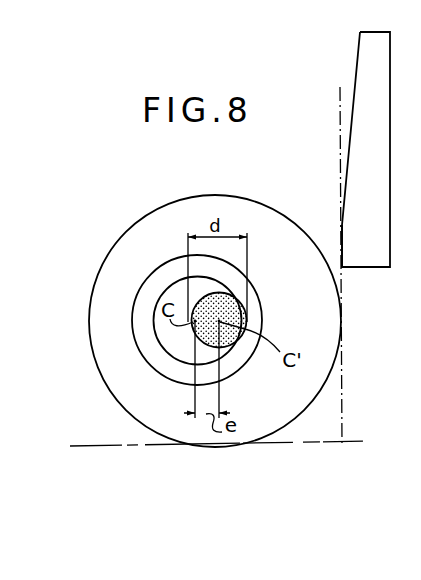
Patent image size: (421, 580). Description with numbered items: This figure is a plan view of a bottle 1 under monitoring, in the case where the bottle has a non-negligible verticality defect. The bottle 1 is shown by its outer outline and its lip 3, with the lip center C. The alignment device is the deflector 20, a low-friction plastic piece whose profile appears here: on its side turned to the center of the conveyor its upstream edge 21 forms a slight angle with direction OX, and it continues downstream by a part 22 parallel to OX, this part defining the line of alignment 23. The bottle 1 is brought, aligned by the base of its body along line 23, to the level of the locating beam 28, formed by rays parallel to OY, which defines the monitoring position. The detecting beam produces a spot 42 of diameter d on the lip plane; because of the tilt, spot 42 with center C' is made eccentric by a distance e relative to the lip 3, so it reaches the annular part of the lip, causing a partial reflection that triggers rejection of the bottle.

The bottle 1 is at (112, 366).
The lip 3 is at (168, 364).
The spot 42 is at (229, 337).
The deflector 20 is at (368, 242).
The edge 21 is at (358, 55).
The part 22 is at (340, 228).
The line of alignment 23 is at (343, 402).
The locating beam 28 is at (92, 445).